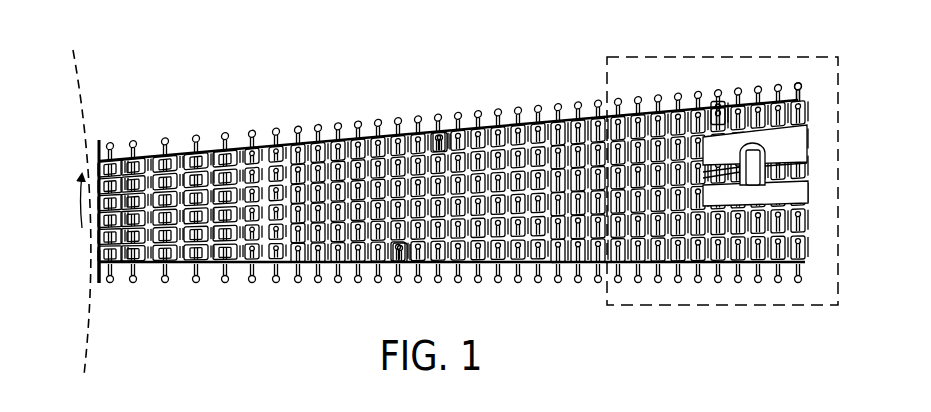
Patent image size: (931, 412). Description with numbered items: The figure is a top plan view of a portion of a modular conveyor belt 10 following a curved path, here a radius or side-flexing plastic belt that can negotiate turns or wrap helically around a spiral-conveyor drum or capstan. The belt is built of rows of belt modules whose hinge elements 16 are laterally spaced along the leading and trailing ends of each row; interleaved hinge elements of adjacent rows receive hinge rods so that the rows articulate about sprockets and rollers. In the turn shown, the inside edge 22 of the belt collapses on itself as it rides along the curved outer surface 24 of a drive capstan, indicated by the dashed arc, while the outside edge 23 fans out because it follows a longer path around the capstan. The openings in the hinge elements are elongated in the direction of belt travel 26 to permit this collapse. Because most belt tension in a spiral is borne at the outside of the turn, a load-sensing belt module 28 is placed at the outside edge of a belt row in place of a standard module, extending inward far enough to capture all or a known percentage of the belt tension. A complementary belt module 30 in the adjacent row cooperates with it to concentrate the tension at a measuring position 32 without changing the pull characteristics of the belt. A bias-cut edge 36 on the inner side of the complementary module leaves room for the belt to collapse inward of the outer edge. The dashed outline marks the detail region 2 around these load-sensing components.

The detail region 2 is at (688, 305).
The conveyor belt 10 is at (277, 61).
The hinge elements 16 is at (441, 117).
The inside edge 22 is at (100, 252).
The outside edge 23 is at (803, 88).
The curved outer surface 24 is at (90, 110).
The direction of belt travel 26 is at (80, 204).
The load-sensing belt module 28 is at (808, 139).
The complementary belt module 30 is at (809, 185).
The measuring position 32 is at (767, 165).
The bias-cut edge 36 is at (710, 167).